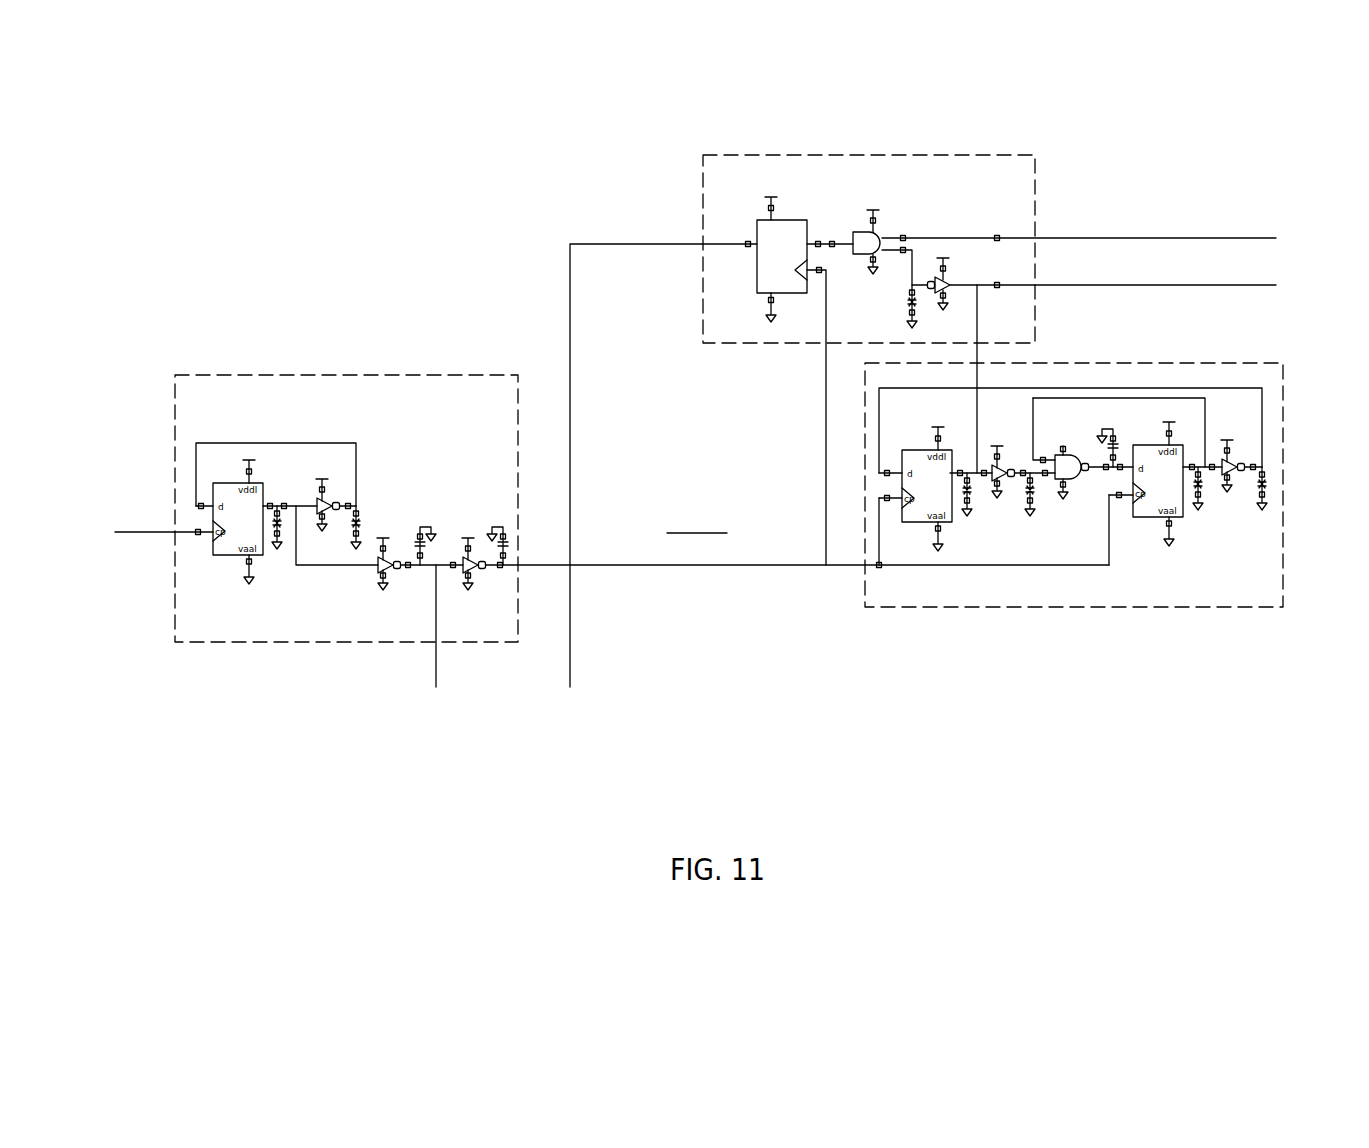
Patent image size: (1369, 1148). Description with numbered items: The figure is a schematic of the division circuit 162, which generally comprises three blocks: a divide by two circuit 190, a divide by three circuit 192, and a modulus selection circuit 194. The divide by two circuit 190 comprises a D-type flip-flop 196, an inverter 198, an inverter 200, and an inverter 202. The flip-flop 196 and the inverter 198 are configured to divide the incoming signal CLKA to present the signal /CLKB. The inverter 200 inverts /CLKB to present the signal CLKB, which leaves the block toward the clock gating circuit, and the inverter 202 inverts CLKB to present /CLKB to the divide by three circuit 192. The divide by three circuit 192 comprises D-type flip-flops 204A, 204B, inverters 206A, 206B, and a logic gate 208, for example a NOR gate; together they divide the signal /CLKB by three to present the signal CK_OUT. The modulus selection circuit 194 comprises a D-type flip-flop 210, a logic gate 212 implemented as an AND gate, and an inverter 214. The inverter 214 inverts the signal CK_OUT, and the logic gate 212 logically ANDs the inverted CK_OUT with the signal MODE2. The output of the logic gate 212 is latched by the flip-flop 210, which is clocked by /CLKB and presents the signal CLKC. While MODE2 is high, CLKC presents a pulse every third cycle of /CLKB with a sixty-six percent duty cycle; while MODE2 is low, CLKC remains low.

The division circuit 162 is at (516, 110).
The divide by 2 circuit 190 is at (272, 375).
The divide by 3 circuit 192 is at (1245, 365).
The modulus selection circuit 194 is at (960, 156).
The D-type flip-flop 196 is at (237, 558).
The inverter 198 is at (330, 500).
The inverter 200 is at (380, 570).
The inverter 202 is at (482, 569).
The D-type flip-flop 204A is at (925, 450).
The D-type flip-flop 204B is at (1147, 445).
The inverter 206A is at (1000, 485).
The inverter 206B is at (1240, 462).
The logic gate 208 is at (1073, 457).
The D-type flip-flop 210 is at (757, 275).
The logic gate 212 is at (865, 232).
The inverter 214 is at (950, 280).